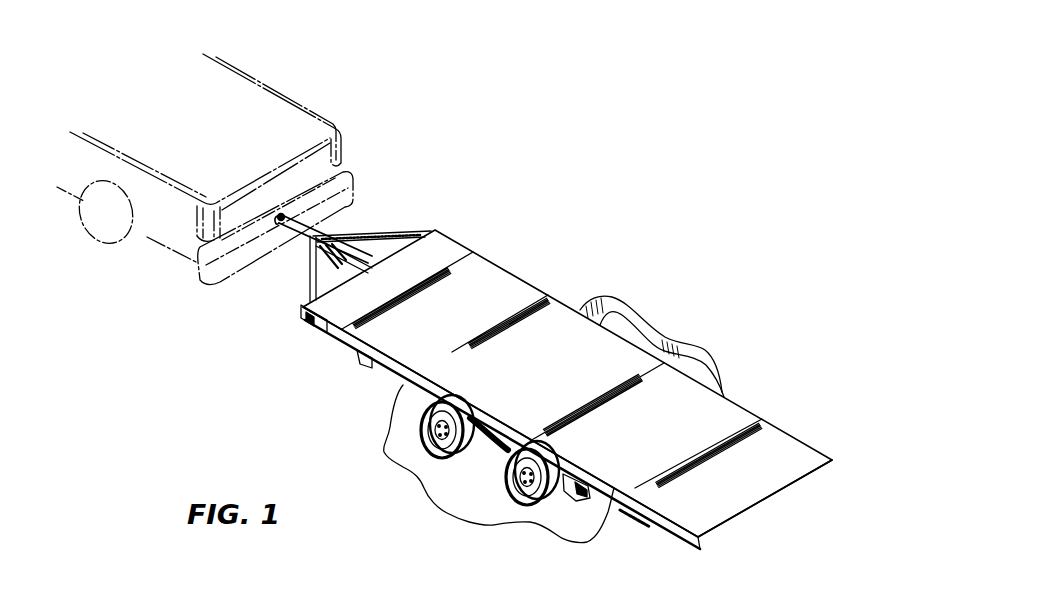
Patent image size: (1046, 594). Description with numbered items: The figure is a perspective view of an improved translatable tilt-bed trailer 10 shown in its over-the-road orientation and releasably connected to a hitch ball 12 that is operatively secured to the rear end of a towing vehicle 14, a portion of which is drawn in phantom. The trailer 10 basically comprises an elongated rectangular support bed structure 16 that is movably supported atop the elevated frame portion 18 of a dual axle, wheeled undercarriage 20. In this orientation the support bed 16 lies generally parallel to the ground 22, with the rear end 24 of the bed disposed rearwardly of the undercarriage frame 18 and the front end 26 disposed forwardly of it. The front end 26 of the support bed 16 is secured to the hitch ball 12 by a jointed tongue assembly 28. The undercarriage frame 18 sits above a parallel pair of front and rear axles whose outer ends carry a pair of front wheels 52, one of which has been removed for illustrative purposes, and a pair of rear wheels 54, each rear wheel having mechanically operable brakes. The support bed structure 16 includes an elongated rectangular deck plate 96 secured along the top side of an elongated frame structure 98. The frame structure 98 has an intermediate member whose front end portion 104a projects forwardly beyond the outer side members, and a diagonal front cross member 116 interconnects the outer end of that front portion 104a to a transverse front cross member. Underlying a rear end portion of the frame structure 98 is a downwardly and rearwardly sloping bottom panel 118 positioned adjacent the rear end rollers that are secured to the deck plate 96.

The translatable tilt-bed trailer 10 is at (571, 241).
The hitch ball 12 is at (264, 270).
The towing vehicle 14 is at (277, 90).
The support bed structure 16 is at (567, 383).
The elevated frame portion 18 is at (565, 486).
The wheeled undercarriage 20 is at (648, 326).
The ground 22 is at (404, 466).
The rear end of the bed 24 is at (762, 503).
The front end of the bed 26 is at (302, 300).
The jointed tongue assembly 28 is at (340, 230).
The front wheels 52 is at (447, 426).
The rear wheels 54 is at (513, 498).
The deck plate 96 is at (549, 375).
The frame structure 98 is at (652, 520).
The front end portion of intermediate member 104a is at (368, 259).
The diagonal front cross member 116 is at (310, 277).
The bottom panel 118 is at (402, 232).